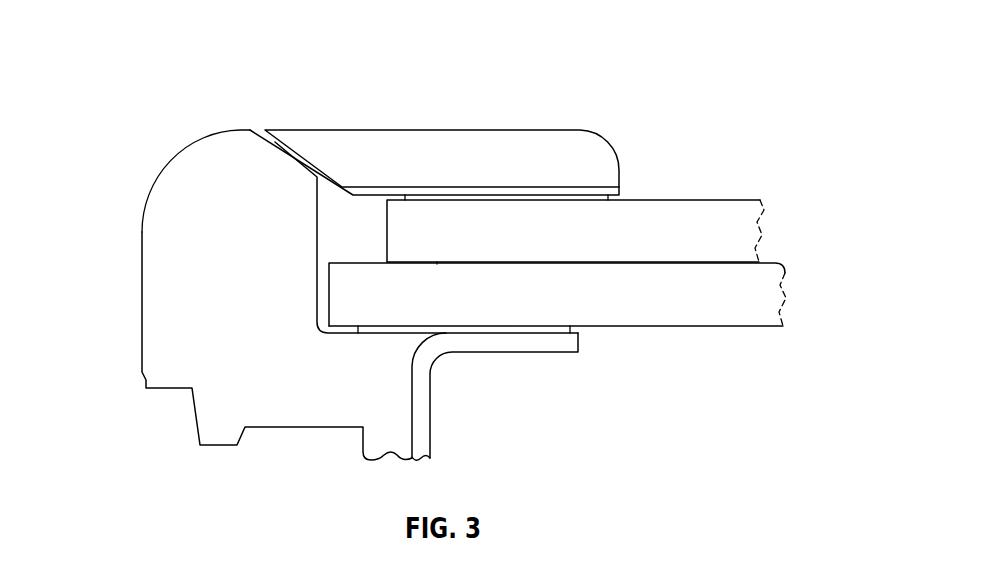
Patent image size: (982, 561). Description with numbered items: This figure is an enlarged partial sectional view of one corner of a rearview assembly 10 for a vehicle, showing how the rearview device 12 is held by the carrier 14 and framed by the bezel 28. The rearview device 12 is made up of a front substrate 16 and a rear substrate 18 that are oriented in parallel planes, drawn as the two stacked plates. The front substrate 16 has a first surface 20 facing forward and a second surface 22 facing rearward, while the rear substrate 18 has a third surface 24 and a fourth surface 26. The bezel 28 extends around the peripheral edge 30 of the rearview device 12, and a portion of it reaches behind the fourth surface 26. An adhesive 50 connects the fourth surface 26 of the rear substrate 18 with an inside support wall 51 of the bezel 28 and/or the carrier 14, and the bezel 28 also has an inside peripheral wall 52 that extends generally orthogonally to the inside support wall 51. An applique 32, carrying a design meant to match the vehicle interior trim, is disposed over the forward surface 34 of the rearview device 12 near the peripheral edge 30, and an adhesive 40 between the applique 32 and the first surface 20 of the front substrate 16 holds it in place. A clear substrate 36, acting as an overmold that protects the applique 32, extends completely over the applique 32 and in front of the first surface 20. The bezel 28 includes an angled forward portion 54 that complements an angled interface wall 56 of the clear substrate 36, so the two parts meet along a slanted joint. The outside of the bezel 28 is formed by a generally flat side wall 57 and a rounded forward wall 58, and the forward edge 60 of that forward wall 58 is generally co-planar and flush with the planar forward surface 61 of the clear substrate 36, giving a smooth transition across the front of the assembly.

The rearview assembly 10 is at (718, 82).
The rearview device 12 is at (742, 217).
The carrier 14 is at (492, 340).
The front substrate 16 is at (695, 220).
The rear substrate 18 is at (732, 287).
The first surface 20 is at (628, 198).
The second surface 22 is at (637, 261).
The third surface 24 is at (667, 265).
The fourth surface 26 is at (607, 329).
The bezel 28 is at (176, 246).
The peripheral edge 30 is at (328, 292).
The applique 32 is at (433, 192).
The forward surface 34 is at (563, 198).
The clear substrate 36 is at (398, 145).
The adhesive 40 is at (507, 197).
The adhesive 50 is at (417, 329).
The inside support wall 51 is at (537, 333).
The inside peripheral wall 52 is at (317, 227).
The angled forward portion 54 is at (262, 139).
The angled interface wall 56 is at (290, 156).
The flat side wall 57 is at (142, 339).
The rounded forward wall 58 is at (145, 203).
The forward edge 60 is at (250, 129).
The forward surface 61 is at (373, 128).